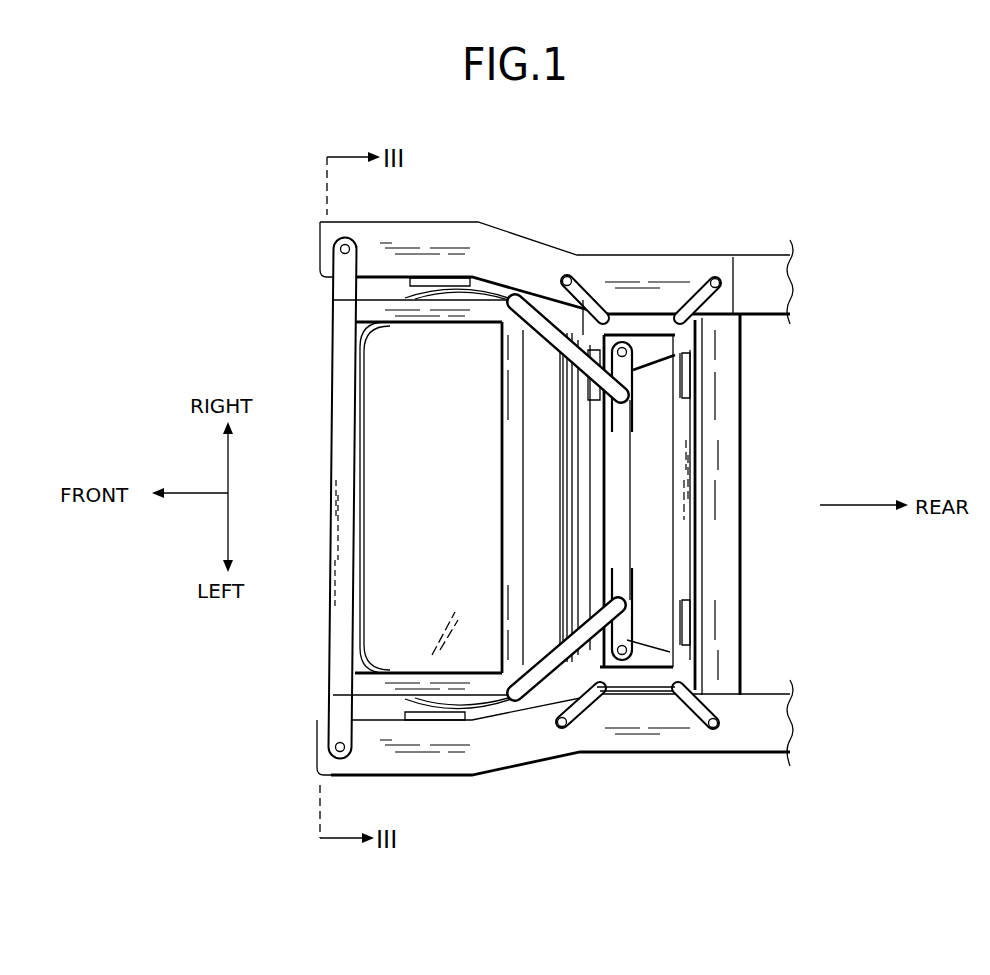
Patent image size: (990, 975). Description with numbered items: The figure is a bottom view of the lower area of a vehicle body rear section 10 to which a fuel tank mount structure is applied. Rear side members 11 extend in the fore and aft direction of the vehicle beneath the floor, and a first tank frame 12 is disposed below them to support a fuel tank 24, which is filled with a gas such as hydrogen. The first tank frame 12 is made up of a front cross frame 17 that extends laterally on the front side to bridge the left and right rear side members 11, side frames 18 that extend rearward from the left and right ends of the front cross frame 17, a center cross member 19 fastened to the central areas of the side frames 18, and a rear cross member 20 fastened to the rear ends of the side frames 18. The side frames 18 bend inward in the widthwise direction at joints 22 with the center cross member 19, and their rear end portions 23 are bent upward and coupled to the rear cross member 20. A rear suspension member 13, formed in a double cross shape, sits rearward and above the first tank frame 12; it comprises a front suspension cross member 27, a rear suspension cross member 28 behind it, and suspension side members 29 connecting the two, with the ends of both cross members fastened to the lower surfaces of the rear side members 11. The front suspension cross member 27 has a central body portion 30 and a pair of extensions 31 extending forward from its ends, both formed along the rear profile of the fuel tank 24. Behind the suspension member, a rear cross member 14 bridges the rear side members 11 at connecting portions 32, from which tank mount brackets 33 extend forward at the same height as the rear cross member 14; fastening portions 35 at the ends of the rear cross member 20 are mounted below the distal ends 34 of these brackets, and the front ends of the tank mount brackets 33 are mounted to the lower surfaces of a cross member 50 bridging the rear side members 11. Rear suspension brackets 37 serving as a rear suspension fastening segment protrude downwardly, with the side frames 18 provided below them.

The vehicle body rear section 10 is at (244, 215).
The rear side members 11 is at (518, 262).
The first tank frame 12 is at (323, 375).
The rear suspension member 13 is at (697, 583).
The rear cross member 14 is at (727, 402).
The front cross frame 17 is at (332, 665).
The side frames 18 is at (375, 310).
The center cross member 19 is at (505, 482).
The rear cross member 20 is at (620, 533).
The joints 22 is at (513, 322).
The rear end portions 23 is at (622, 394).
The fuel tank 24 is at (411, 588).
The front suspension cross member 27 is at (572, 436).
The rear suspension cross member 28 is at (688, 482).
The suspension side members 29 is at (628, 680).
The body portion 30 is at (590, 547).
The extensions 31 is at (586, 300).
The connecting portions 32 is at (735, 258).
The tank mount brackets 33 is at (662, 337).
The distal ends 34 is at (633, 366).
The fastening portions 35 is at (619, 347).
The rear suspension brackets 37 is at (700, 368).
The cross member 50 is at (580, 512).